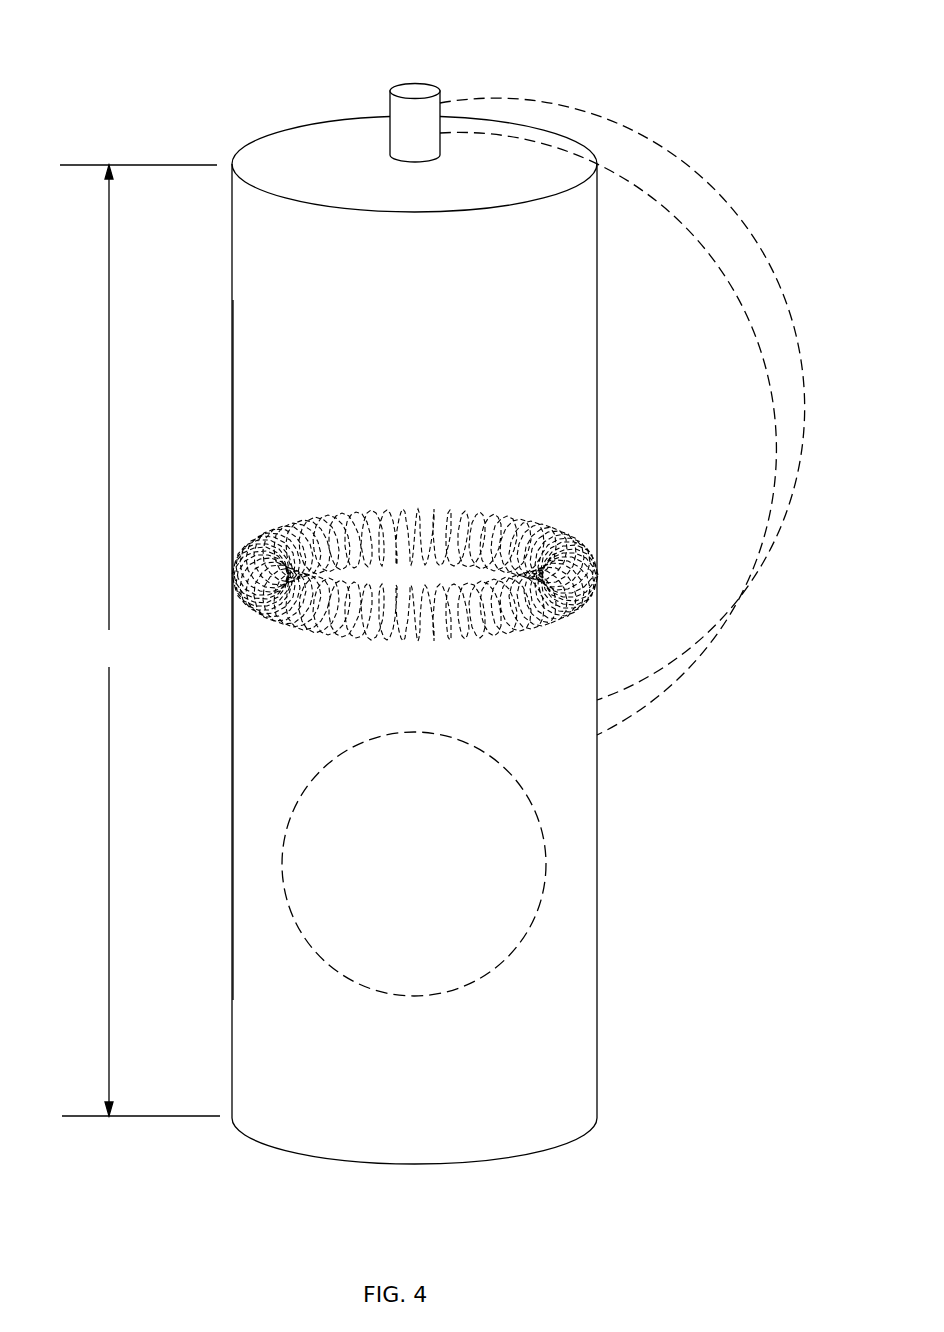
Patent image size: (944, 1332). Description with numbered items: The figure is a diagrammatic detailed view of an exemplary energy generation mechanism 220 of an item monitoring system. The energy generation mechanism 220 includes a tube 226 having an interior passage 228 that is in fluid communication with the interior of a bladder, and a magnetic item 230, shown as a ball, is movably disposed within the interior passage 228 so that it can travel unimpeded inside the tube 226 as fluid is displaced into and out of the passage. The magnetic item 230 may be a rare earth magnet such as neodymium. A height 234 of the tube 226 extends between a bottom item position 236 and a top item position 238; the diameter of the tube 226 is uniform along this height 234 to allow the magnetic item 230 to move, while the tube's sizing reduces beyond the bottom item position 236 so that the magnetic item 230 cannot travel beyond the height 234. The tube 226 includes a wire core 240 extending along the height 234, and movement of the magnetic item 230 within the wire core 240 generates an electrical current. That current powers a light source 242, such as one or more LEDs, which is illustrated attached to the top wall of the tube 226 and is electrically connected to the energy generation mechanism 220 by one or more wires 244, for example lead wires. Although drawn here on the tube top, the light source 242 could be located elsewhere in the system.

The energy generation mechanism 220 is at (690, 52).
The tube 226 is at (232, 290).
The interior passage 228 is at (265, 413).
The magnetic item 230 is at (545, 845).
The height 234 is at (131, 660).
The bottom item position 236 is at (558, 1143).
The top item position 238 is at (272, 150).
The wire core 240 is at (253, 527).
The light source 242 is at (390, 113).
The wires 244 is at (798, 337).